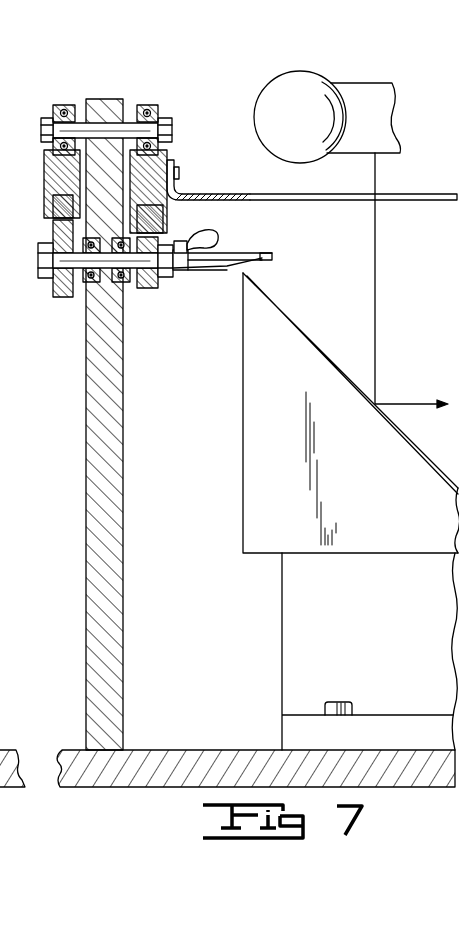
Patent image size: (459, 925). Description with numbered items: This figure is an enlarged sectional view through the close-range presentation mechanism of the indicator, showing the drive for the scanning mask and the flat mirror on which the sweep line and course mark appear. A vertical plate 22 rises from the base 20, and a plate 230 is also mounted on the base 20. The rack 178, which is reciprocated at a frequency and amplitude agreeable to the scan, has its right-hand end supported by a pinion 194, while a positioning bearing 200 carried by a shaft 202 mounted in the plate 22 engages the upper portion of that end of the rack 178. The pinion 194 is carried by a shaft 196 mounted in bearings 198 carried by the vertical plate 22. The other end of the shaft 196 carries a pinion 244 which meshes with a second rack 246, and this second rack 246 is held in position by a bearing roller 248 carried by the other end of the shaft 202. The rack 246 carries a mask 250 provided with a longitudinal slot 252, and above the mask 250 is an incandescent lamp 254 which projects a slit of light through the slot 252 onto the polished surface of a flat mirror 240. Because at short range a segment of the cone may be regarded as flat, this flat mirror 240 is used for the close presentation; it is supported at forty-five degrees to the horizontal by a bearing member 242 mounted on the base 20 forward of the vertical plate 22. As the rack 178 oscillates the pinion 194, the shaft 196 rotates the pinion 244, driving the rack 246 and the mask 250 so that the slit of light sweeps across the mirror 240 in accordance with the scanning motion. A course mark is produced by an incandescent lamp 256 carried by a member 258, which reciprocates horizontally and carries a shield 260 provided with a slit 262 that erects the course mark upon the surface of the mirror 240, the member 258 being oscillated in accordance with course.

The base 20 is at (188, 750).
The vertical plate 22 is at (117, 510).
The rack 178 is at (47, 172).
The pinion 194 is at (62, 298).
The shaft 196 is at (110, 280).
The bearings 198 is at (124, 288).
The positioning bearing 200 is at (52, 120).
The shaft 202 is at (115, 132).
The plate 230 is at (14, 528).
The flat mirror 240 is at (296, 322).
The bearing member 242 is at (291, 645).
The pinion 244 is at (152, 283).
The second rack 246 is at (170, 221).
The bearing roller 248 is at (152, 107).
The mask 250 is at (212, 195).
The longitudinal slot 252 is at (341, 201).
The incandescent lamp 254 is at (346, 120).
The incandescent lamp 256 is at (216, 240).
The member 258 is at (190, 270).
The shield 260 is at (236, 252).
The slit 262 is at (276, 256).